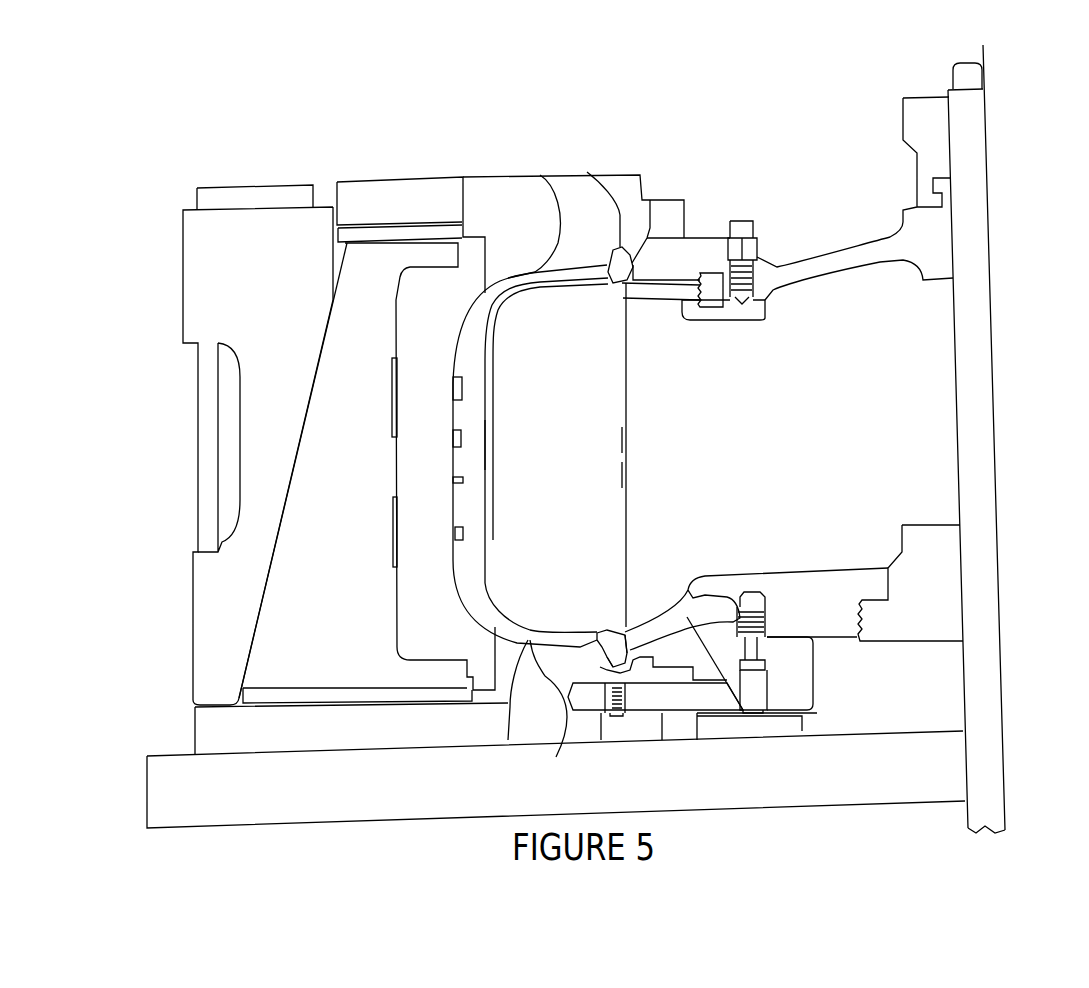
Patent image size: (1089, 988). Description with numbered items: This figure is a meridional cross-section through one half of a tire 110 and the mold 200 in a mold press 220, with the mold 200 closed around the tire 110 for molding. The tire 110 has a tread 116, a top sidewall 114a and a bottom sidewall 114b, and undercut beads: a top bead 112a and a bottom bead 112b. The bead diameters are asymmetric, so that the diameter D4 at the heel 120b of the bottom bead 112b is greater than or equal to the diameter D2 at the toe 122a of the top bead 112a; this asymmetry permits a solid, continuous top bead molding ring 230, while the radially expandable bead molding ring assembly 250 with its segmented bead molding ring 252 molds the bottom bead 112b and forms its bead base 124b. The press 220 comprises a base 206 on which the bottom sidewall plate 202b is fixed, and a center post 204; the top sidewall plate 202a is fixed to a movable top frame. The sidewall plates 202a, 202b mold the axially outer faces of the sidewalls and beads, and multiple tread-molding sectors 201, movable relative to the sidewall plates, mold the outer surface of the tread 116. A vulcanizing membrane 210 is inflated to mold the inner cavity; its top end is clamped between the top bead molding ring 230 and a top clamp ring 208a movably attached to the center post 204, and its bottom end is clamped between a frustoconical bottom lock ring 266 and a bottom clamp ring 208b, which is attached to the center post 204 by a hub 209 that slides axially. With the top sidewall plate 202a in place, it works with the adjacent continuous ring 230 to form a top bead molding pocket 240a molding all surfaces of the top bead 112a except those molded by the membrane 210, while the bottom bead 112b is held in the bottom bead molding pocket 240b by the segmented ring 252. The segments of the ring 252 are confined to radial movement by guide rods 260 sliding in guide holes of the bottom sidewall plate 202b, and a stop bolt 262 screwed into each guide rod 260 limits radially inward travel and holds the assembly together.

The mold 200 is at (661, 140).
The top sidewall 114a is at (538, 173).
The top bead 112a is at (587, 172).
The top bead molding pocket 240a is at (634, 242).
The top sidewall plate 202a is at (531, 220).
The top bead molding ring 230 is at (696, 274).
The top clamp ring 208a is at (823, 268).
The toe of the top bead 122a is at (608, 282).
The sectors 201 is at (440, 337).
The tread 116 is at (457, 410).
The vulcanizing membrane 210 is at (492, 450).
The tire 110 is at (470, 513).
The diameter at the toe of the top bead D2 is at (631, 440).
The diameter at the heel of the bottom bead D4 is at (631, 475).
The center post 204 is at (966, 377).
The press 220 is at (1020, 777).
The radially expandable bead molding ring assembly 250 is at (727, 550).
The heel of the bottom bead 120b is at (618, 648).
The bead base 124b is at (628, 640).
The bottom bead 112b is at (600, 640).
The bottom clamp ring 208b is at (832, 608).
The hub 209 is at (945, 595).
The segmented bead molding ring 252 is at (689, 661).
The bottom lock ring 266 is at (808, 674).
The bottom sidewall plate 202b is at (425, 744).
The base 206 is at (420, 797).
The bottom sidewall 114b is at (508, 740).
The bottom bead molding pocket 240b is at (585, 661).
The stop bolt 262 is at (615, 717).
The guide rod 260 is at (672, 733).